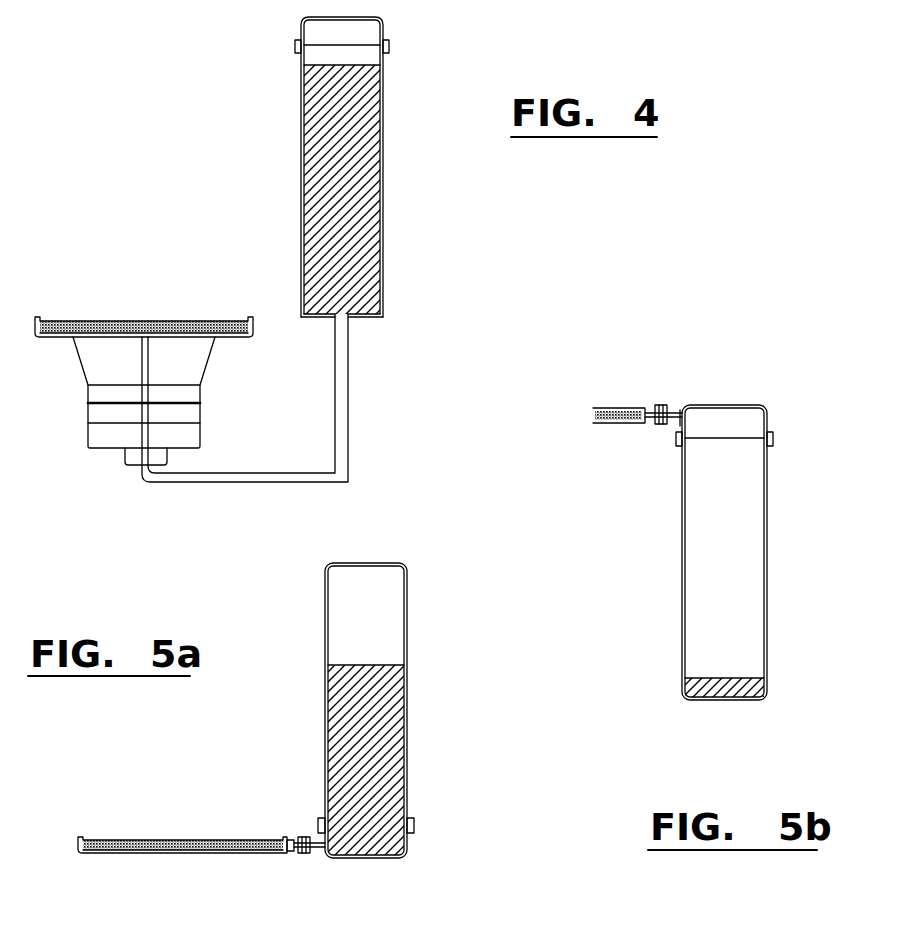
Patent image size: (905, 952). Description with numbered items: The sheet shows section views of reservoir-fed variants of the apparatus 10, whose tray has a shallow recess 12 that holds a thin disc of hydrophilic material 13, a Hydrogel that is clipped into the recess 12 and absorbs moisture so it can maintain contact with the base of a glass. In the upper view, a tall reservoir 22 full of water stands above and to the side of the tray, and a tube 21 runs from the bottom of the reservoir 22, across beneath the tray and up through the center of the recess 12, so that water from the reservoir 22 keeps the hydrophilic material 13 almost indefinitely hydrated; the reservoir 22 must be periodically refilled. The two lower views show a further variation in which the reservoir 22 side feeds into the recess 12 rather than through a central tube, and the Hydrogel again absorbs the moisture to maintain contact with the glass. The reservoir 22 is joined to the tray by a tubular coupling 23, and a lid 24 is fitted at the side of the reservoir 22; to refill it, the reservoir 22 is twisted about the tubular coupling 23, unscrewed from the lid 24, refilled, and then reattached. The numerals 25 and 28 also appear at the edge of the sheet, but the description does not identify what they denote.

In FIG. 5A, the apparatus 10 is at (95, 945).
In FIG. 4, the shallow recess portion 12 is at (187, 322).
In FIG. 5A, the shallow recess portion 12 is at (229, 838).
In FIG. 4, the hydrophilic material 13 is at (87, 320).
In FIG. 5A, the hydrophilic material 13 is at (119, 831).
In FIG. 5B, the hydrophilic material 13 is at (705, 680).
In FIG. 4, the tube 21 is at (195, 484).
In FIG. 4, the reservoir 22 is at (348, 225).
In FIG. 5A, the reservoir 22 is at (395, 709).
In FIG. 5B, the reservoir 22 is at (740, 573).
In FIG. 5A, the tubular coupling 23 is at (293, 878).
In FIG. 5B, the tubular coupling 23 is at (660, 405).
In FIG. 5A, the lid 24 is at (414, 823).
In FIG. 5B, the lid 24 is at (775, 438).
In FIG. 5A, the base 25 is at (257, 945).
In FIG. 5B, the support 28 is at (665, 945).